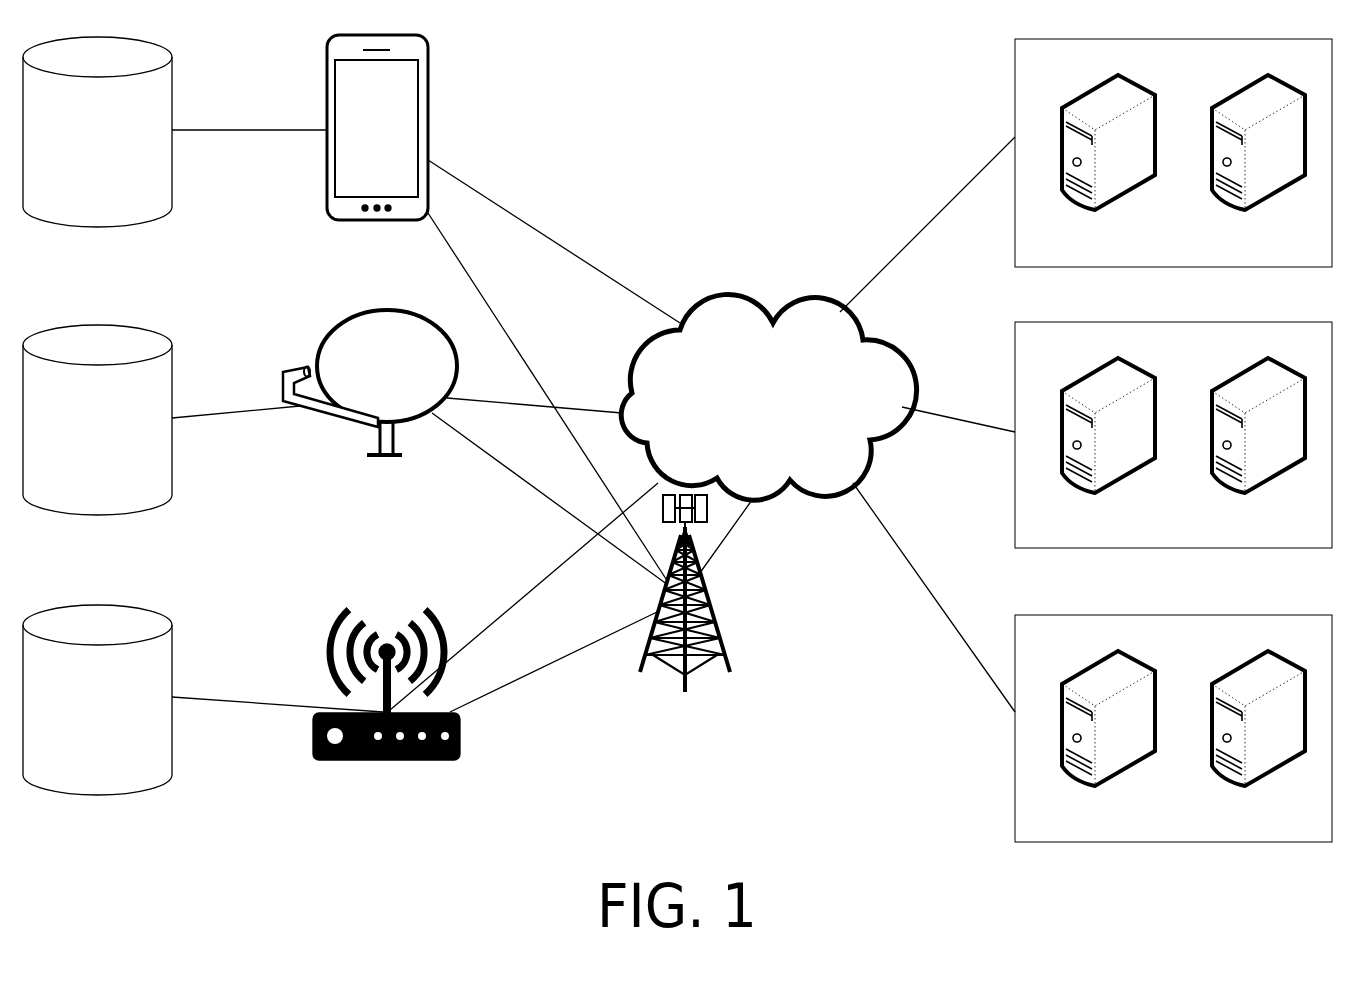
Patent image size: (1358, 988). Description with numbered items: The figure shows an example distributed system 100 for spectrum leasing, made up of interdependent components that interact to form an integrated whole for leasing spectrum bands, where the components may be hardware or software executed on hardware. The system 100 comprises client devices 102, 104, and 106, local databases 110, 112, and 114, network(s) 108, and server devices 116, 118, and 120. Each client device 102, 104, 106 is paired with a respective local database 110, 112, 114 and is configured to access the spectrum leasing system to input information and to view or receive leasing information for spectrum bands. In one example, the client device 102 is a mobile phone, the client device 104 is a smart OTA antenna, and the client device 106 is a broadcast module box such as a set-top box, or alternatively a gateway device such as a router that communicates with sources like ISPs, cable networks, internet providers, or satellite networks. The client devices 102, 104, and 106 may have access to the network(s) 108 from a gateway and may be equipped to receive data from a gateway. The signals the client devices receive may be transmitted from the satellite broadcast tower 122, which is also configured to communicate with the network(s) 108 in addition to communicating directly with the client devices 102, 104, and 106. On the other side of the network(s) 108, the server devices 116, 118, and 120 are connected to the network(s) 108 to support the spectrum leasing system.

The system 100 is at (700, 102).
The client device 102 is at (359, 146).
The client device 104 is at (359, 519).
The client device 106 is at (372, 807).
The network(s) 108 is at (742, 442).
The local database 110 is at (79, 146).
The local database 112 is at (79, 434).
The local database 114 is at (79, 709).
The server device 116 is at (1157, 251).
The server device 118 is at (1157, 532).
The server device 120 is at (1157, 827).
The satellite broadcast tower 122 is at (667, 739).